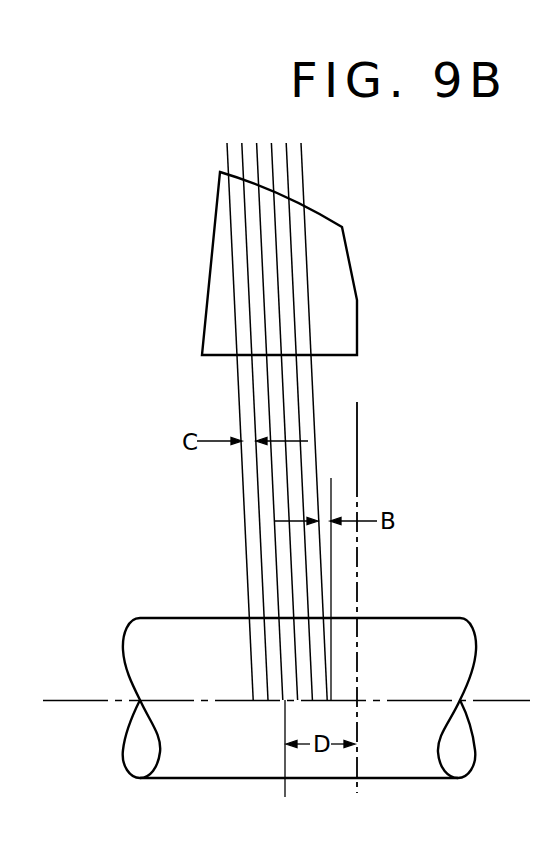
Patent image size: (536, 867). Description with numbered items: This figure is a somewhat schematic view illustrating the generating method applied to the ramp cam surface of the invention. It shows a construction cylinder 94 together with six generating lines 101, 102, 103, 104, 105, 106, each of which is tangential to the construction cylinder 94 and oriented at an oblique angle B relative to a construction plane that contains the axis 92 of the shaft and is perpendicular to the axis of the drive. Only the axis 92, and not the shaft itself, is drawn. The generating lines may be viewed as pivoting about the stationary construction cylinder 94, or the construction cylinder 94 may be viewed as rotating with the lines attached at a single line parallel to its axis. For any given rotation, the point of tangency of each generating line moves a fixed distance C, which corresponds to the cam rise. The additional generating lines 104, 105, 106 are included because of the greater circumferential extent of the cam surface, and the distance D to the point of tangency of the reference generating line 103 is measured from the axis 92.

The axis of the shaft 92 is at (358, 463).
The construction cylinder 94 is at (191, 630).
The generating line 101 is at (229, 207).
The generating line 102 is at (246, 247).
The generating line 103 is at (263, 287).
The generating line 104 is at (277, 220).
The generating line 105 is at (292, 255).
The generating line 106 is at (308, 287).